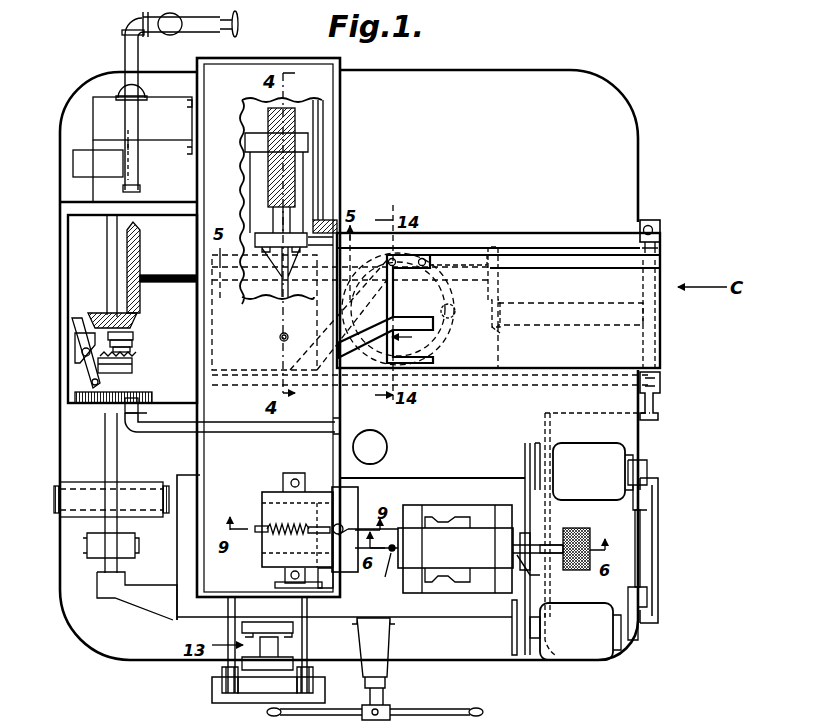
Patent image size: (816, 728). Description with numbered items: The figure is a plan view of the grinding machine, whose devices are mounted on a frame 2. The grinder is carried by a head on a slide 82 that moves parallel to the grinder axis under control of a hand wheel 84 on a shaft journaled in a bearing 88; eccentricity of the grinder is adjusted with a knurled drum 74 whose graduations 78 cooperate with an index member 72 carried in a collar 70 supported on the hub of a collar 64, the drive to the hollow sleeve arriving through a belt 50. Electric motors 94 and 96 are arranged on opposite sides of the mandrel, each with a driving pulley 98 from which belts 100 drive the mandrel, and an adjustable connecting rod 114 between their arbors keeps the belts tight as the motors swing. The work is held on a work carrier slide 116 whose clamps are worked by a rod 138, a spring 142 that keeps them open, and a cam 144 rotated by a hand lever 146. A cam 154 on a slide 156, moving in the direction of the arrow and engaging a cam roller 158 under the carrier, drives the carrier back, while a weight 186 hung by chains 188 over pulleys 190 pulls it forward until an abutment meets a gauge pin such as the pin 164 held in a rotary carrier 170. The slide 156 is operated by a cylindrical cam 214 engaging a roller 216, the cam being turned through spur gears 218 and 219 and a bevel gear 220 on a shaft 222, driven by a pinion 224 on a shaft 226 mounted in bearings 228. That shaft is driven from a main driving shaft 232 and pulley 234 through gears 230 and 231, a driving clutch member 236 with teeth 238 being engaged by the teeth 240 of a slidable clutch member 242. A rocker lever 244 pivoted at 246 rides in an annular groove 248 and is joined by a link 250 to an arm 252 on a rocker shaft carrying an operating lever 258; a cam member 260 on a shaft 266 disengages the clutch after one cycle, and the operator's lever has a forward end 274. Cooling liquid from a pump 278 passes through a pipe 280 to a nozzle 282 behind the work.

The frame 2 is at (62, 270).
The bearings 228 is at (93, 106).
The pump 278 is at (73, 162).
The pipe 280 is at (135, 187).
The shaft 226 is at (107, 243).
The bevel gear 220 is at (142, 246).
The shaft 222 is at (177, 260).
The pinion 224 is at (97, 313).
The slidable clutch member 242 is at (133, 334).
The annular groove 248 is at (131, 343).
The teeth 240 is at (129, 349).
The teeth 238 is at (133, 356).
The driving clutch member 236 is at (132, 365).
The pivot 246 is at (82, 350).
The rocker lever 244 is at (92, 367).
The gear 231 is at (75, 398).
The link 250 is at (150, 403).
The gear 230 is at (143, 412).
The main driving shaft 232 is at (113, 455).
The pulley 234 is at (77, 497).
The work carrier slide 116 is at (212, 453).
The gauge pin 164 is at (265, 220).
The rotary carrier 170 is at (265, 228).
The cam roller 158 is at (279, 337).
The cam 154 is at (399, 318).
The slide 156 is at (463, 260).
The cylindrical cam 214 is at (440, 253).
The spur gear 218 is at (495, 247).
The roller 216 is at (462, 330).
The spur gear 219 is at (498, 324).
The shaft 266 is at (598, 312).
The cam member 260 is at (643, 343).
The operating lever 258 is at (660, 228).
The arm 252 is at (658, 390).
The nozzle 282 is at (343, 440).
The belts 100 is at (532, 443).
The driving pulley 98 is at (523, 458).
The electric motor 94 is at (606, 447).
The collar 64 is at (528, 555).
The index member 72 is at (535, 548).
The drum 74 is at (590, 526).
The adjustable connecting rod 114 is at (640, 523).
The slide 82 is at (643, 562).
The graduations 78 is at (455, 549).
The collar 70 is at (530, 565).
The belt 50 is at (437, 573).
The electric motor 96 is at (590, 648).
The forward end 274 is at (547, 655).
The rod 138 is at (258, 527).
The spring 142 is at (288, 527).
The cam 144 is at (270, 547).
The hand lever 146 is at (277, 585).
The chains 188 is at (230, 633).
The pulleys 190 is at (225, 688).
The weight 186 is at (253, 690).
The bearing 88 is at (377, 667).
The hand wheel 84 is at (437, 707).